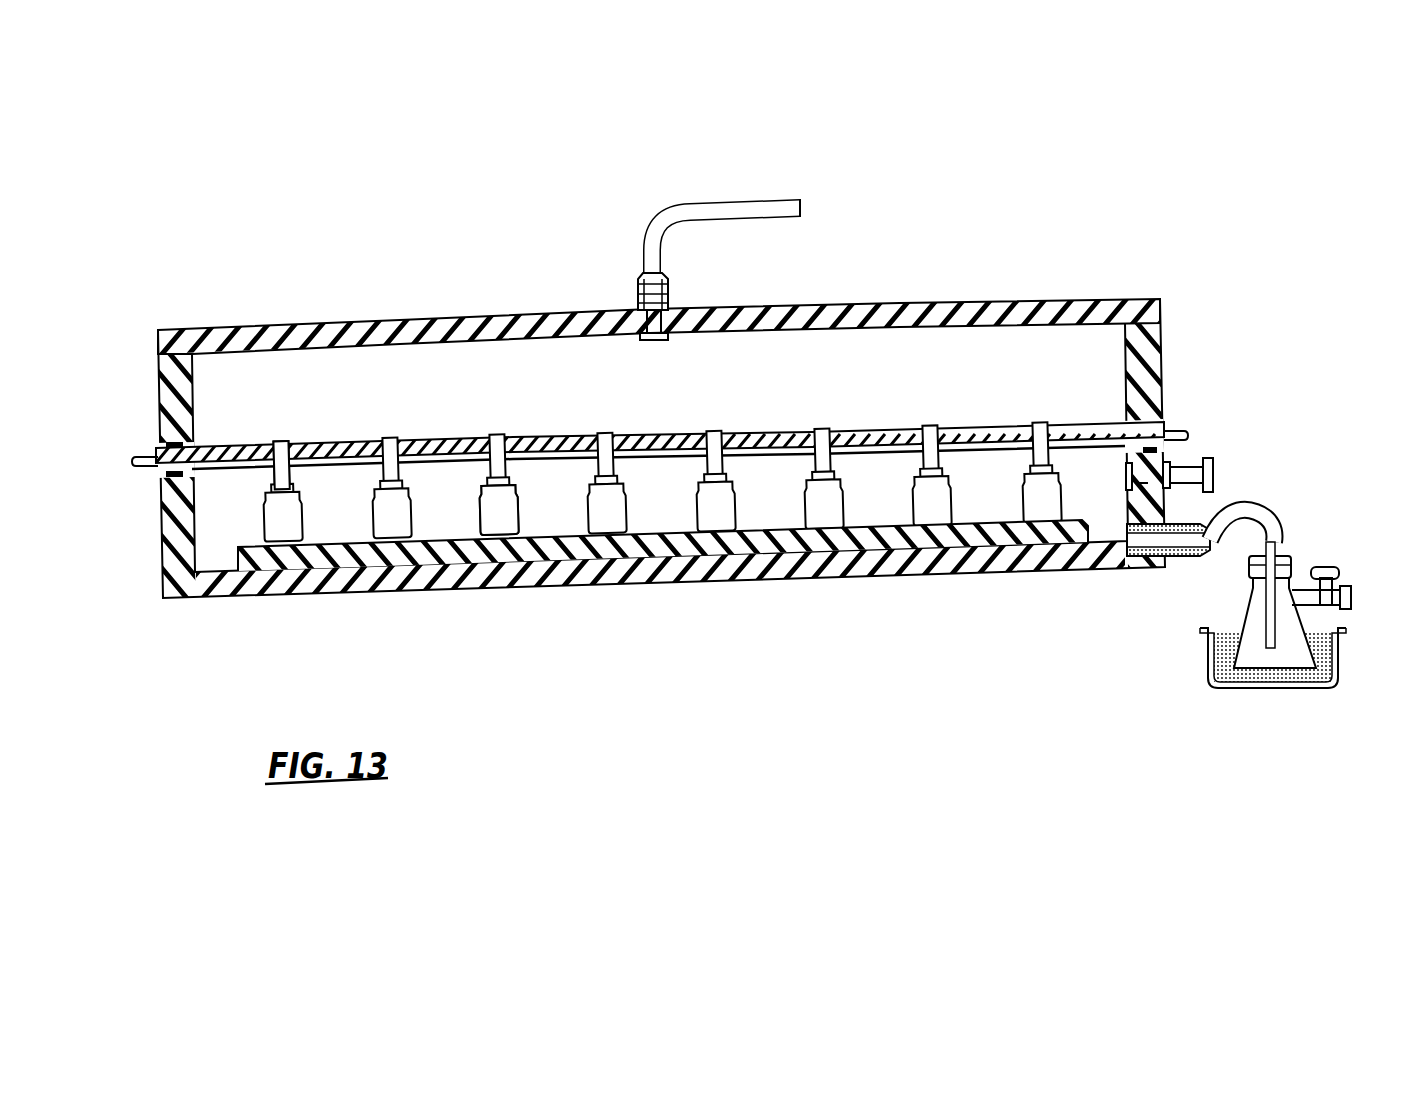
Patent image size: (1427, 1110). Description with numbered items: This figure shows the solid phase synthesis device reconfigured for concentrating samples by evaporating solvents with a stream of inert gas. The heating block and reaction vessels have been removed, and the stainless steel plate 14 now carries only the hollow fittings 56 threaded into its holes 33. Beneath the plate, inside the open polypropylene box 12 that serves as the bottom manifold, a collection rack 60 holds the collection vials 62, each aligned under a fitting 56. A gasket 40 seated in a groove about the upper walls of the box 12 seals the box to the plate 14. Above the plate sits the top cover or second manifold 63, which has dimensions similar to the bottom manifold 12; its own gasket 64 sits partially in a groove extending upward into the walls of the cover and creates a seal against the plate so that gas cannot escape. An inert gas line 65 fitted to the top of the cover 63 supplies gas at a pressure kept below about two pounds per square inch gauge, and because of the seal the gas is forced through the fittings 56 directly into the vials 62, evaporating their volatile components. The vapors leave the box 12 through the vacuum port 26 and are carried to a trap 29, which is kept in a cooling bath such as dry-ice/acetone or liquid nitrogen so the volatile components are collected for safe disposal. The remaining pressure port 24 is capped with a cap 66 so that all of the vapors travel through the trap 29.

The box 12 is at (170, 578).
The stainless steel plate 14 is at (580, 457).
The pressure port 24 is at (1127, 477).
The vacuum port 26 is at (1127, 540).
The trap 29 is at (1297, 648).
The holes 33 is at (262, 472).
The gasket 40 is at (162, 489).
The hollow fitting 56 is at (282, 445).
The collection rack 60 is at (388, 557).
The collection vials 62 is at (503, 518).
The top cover 63 is at (1060, 307).
The gasket 64 is at (138, 434).
The inert gas line 65 is at (738, 201).
The cap 66 is at (1213, 477).